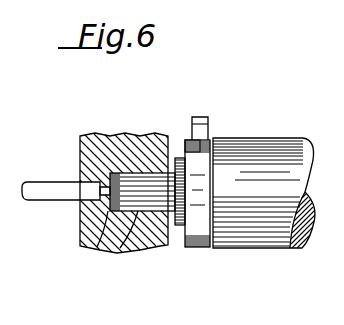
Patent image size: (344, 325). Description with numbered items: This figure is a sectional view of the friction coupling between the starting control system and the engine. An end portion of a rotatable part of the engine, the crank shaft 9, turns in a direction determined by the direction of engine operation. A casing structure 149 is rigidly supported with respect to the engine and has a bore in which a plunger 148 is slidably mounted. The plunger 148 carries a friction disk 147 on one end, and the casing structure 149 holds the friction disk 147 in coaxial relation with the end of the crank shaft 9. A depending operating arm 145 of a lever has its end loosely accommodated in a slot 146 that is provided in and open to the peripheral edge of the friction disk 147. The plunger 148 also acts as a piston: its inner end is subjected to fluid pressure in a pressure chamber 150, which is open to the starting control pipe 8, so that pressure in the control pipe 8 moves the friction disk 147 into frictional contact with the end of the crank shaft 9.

The control pipe 8 is at (50, 190).
The crank shaft 9 is at (282, 143).
The operating arm 145 is at (203, 122).
The slot 146 is at (191, 138).
The friction disk 147 is at (188, 248).
The plunger 148 is at (115, 248).
The casing structure 149 is at (89, 227).
The pressure chamber 150 is at (101, 246).